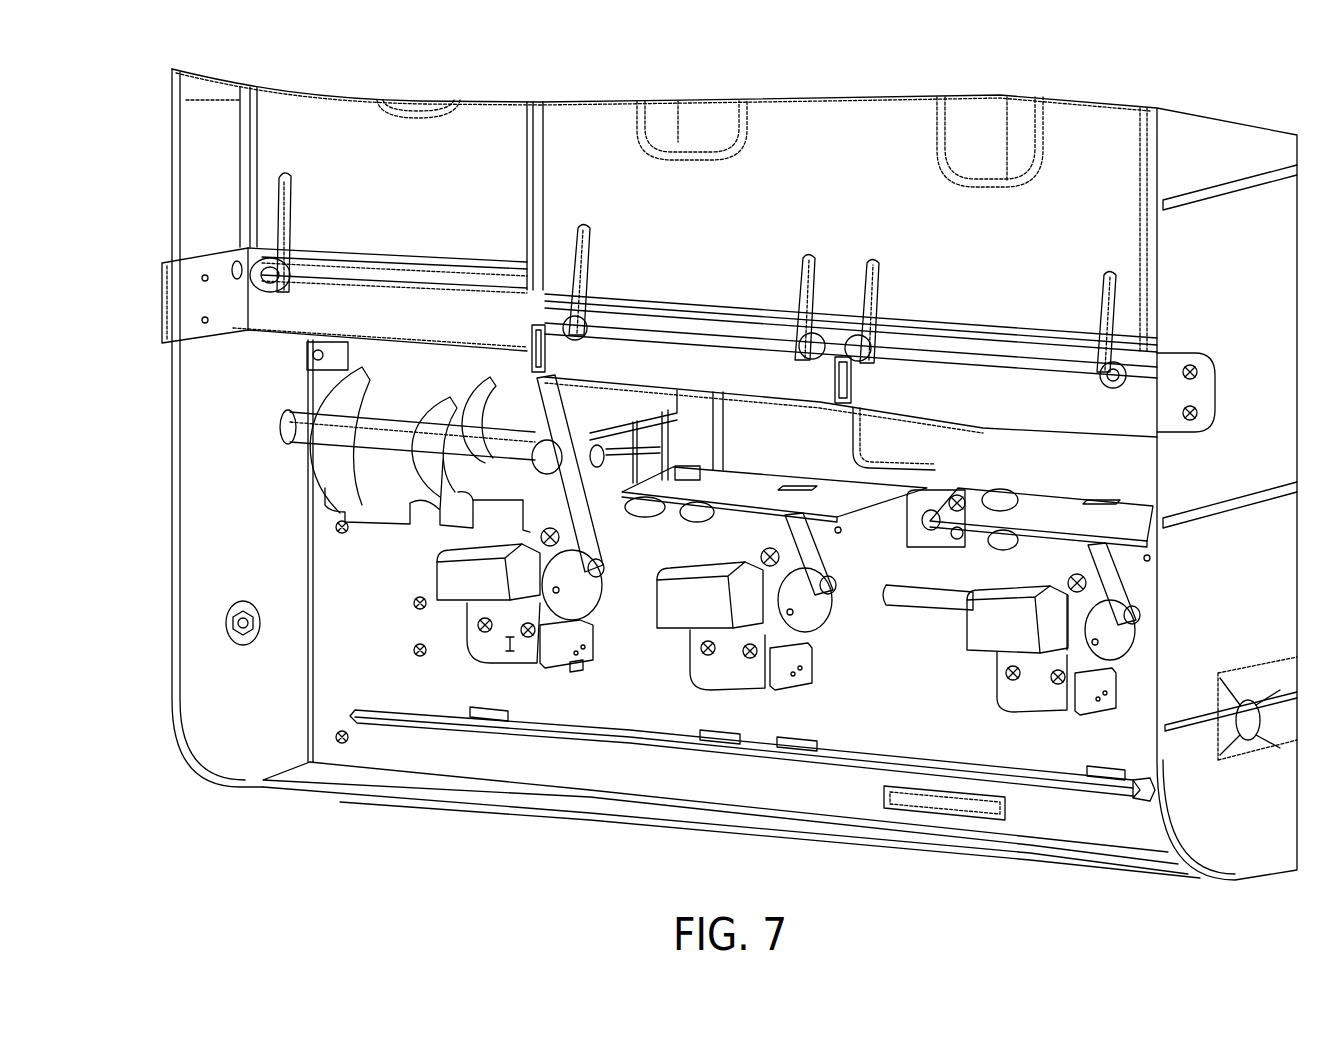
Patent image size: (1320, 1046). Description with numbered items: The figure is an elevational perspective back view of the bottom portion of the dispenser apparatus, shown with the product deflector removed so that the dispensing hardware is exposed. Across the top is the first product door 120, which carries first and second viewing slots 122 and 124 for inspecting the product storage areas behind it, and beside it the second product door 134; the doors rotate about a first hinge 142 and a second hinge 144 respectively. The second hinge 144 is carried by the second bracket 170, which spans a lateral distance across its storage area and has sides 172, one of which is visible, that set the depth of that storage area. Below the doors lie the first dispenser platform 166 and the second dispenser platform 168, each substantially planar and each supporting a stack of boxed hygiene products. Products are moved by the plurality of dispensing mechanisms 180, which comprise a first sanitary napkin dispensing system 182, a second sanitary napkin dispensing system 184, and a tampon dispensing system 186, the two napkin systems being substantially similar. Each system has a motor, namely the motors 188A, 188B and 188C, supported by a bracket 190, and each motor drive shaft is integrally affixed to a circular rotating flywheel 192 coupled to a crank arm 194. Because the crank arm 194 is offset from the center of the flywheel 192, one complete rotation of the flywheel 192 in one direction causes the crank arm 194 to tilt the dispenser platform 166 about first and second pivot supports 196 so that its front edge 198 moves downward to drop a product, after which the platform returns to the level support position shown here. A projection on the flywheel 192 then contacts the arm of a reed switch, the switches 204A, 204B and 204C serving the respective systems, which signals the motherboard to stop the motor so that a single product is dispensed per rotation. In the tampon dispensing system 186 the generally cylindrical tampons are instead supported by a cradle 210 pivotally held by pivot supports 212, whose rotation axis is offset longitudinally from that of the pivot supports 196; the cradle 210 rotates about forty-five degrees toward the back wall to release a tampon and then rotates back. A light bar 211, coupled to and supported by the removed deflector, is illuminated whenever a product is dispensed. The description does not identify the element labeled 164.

The first product door 120 is at (1070, 230).
The first viewing slot 122 is at (1007, 120).
The second viewing slot 124 is at (697, 122).
The second product door 134 is at (313, 118).
The first hinge 142 is at (1003, 352).
The second hinge 144 is at (342, 258).
The bracket 164 is at (1130, 410).
The first dispenser platform 166 is at (1140, 523).
The second dispenser platform 168 is at (742, 485).
The second bracket 170 is at (277, 313).
The sides 172 is at (197, 300).
The dispensing mechanisms 180 is at (340, 567).
The first sanitary napkin dispensing system 182 is at (957, 662).
The second sanitary napkin dispensing system 184 is at (680, 677).
The tampon dispensing system 186 is at (457, 620).
The motor 188A is at (990, 627).
The motor 188B is at (685, 613).
The motor 188C is at (457, 577).
The bracket 190 is at (713, 663).
The circular rotating flywheel 192 is at (582, 605).
The crank arm 194 is at (575, 532).
The pivot supports 196 is at (677, 470).
The front edge 198 is at (1047, 523).
The reed switch 204A is at (1108, 714).
The reed switch 204B is at (800, 685).
The reed switch 204C is at (558, 664).
The cradle 210 is at (357, 463).
The light bar 211 is at (1107, 780).
The pivot supports 212 is at (337, 373).